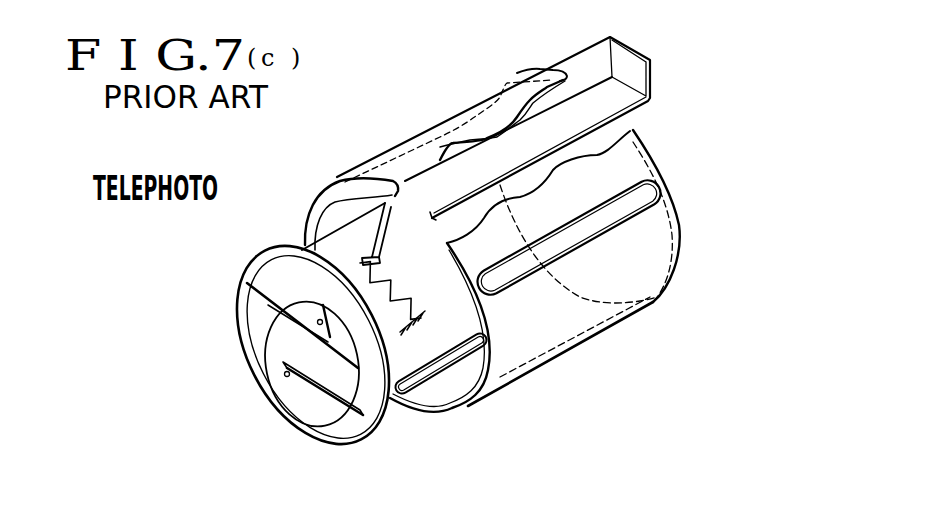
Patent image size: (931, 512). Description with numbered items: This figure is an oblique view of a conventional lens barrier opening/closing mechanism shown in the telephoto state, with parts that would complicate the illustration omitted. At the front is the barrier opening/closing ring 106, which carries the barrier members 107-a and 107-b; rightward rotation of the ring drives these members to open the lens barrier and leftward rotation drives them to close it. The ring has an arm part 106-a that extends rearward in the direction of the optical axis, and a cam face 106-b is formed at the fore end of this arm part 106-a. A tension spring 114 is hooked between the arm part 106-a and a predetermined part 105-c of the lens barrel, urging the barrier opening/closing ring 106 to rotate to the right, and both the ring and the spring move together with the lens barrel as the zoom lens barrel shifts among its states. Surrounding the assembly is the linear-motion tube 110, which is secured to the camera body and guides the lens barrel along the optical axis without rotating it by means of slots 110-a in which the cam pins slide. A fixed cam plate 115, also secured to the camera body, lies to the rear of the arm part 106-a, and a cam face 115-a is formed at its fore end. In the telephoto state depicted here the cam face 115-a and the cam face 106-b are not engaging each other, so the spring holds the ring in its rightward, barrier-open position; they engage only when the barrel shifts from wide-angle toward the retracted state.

The barrier opening/closing ring 106 is at (256, 340).
The arm part 106-a is at (331, 250).
The cam face 106-b is at (393, 229).
The barrier member 107-a is at (266, 277).
The barrier member 107-b is at (318, 403).
The predetermined part of the lens barrel 105-c is at (406, 289).
The tension spring 114 is at (503, 390).
The linear-motion tube 110 is at (640, 265).
The slots 110-a is at (618, 197).
The fixed cam plate 115 is at (589, 99).
The cam face 115-a is at (435, 184).